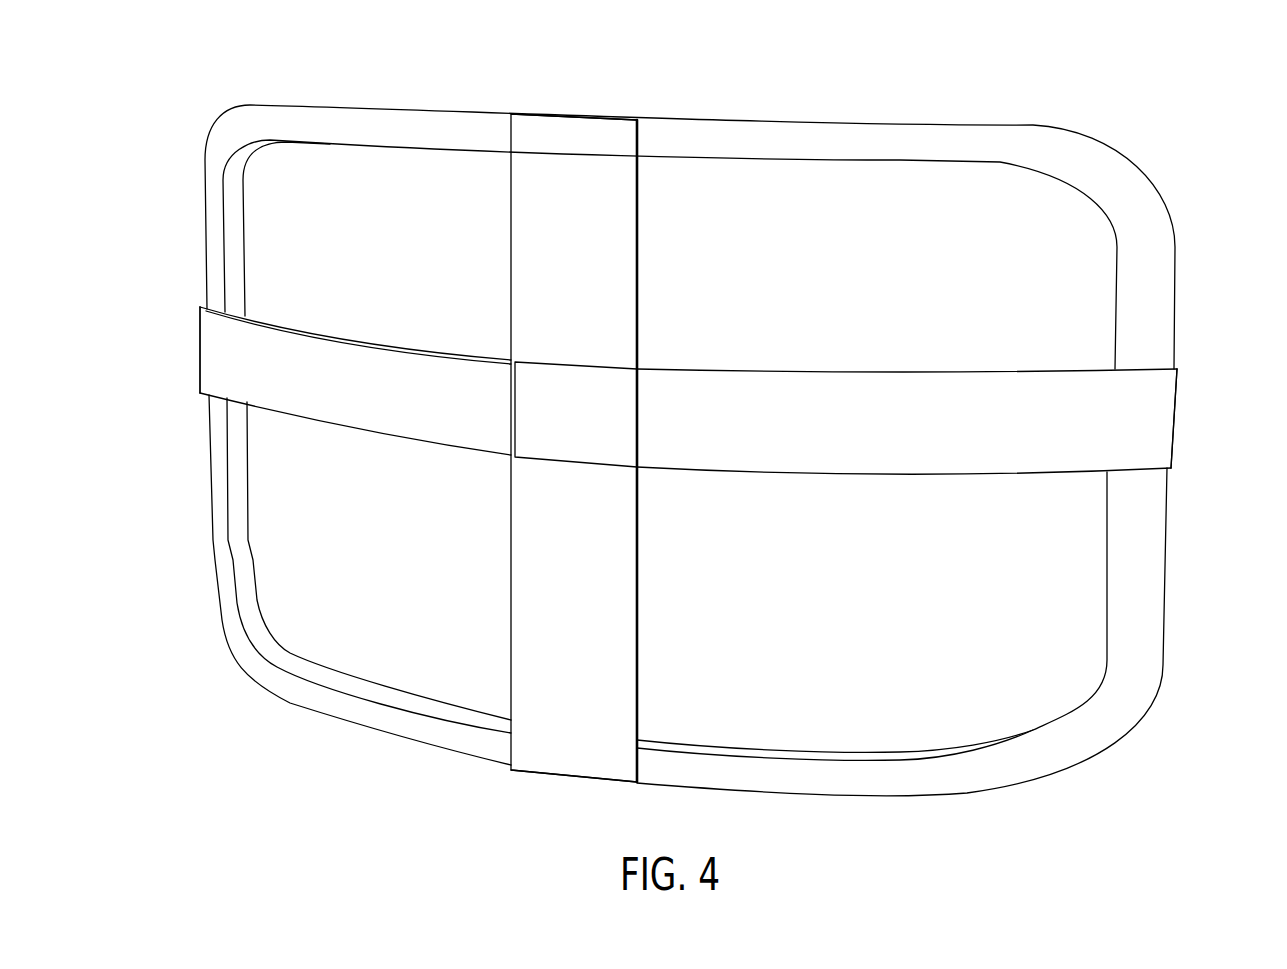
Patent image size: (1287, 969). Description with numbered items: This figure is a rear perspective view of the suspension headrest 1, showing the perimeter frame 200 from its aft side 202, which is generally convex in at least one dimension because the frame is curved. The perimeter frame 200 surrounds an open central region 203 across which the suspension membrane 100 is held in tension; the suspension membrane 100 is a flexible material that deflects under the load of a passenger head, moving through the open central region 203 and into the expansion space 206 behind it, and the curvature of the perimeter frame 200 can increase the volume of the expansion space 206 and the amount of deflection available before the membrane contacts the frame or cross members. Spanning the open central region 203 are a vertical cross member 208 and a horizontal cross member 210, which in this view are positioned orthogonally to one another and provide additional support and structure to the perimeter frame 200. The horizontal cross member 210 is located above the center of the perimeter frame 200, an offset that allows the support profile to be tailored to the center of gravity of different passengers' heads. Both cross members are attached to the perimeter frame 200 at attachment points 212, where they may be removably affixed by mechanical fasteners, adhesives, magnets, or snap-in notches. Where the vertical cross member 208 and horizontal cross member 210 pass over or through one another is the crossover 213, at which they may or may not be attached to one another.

The suspension headrest 1 is at (1195, 115).
The suspension membrane 100 is at (947, 730).
The perimeter frame 200 is at (1142, 578).
The aft side 202 is at (1152, 270).
The open central region 203 is at (1092, 209).
The expansion space 206 is at (1014, 639).
The vertical cross member 208 is at (544, 138).
The horizontal cross member 210 is at (1157, 430).
The attachment points 212 is at (637, 120).
The crossover 213 is at (610, 412).